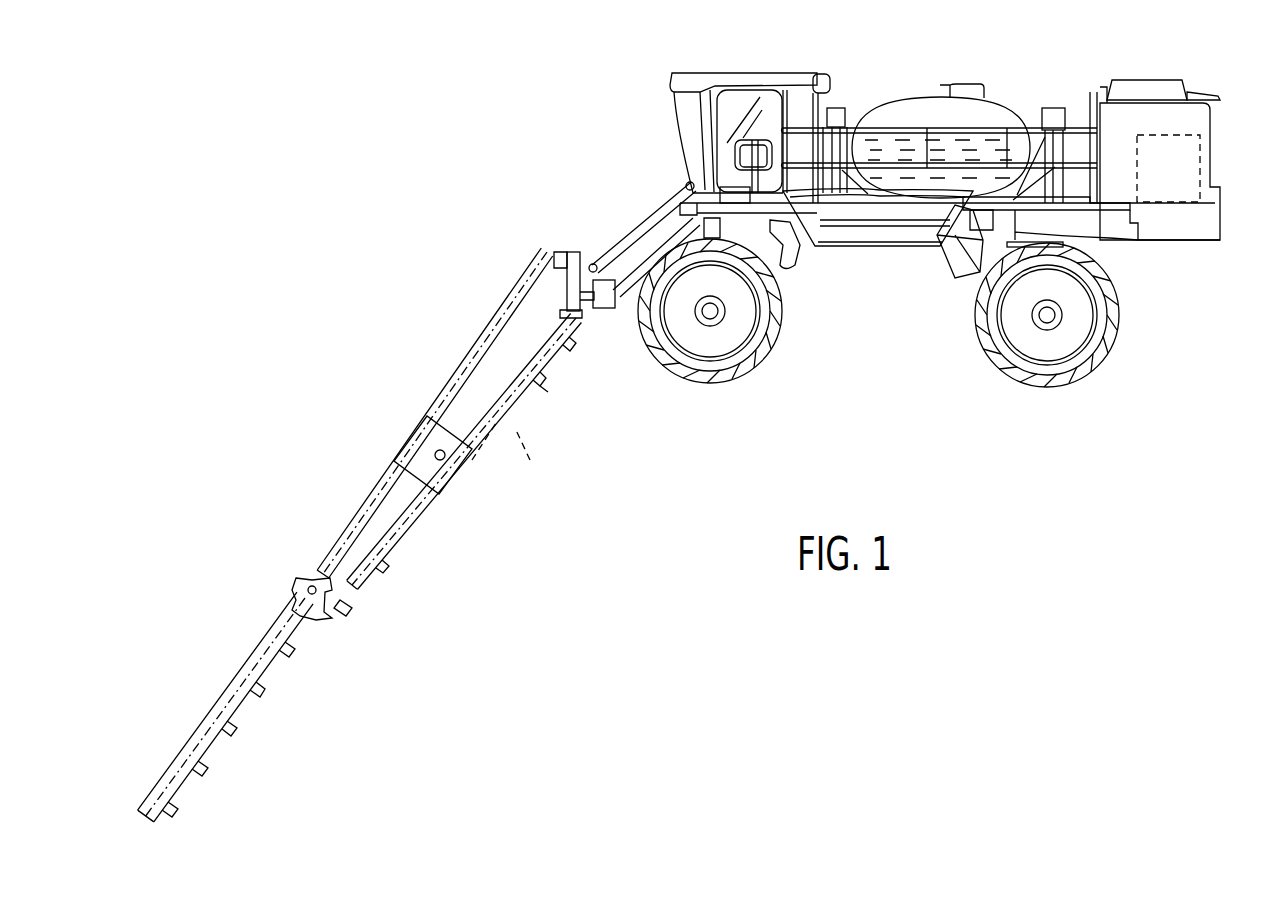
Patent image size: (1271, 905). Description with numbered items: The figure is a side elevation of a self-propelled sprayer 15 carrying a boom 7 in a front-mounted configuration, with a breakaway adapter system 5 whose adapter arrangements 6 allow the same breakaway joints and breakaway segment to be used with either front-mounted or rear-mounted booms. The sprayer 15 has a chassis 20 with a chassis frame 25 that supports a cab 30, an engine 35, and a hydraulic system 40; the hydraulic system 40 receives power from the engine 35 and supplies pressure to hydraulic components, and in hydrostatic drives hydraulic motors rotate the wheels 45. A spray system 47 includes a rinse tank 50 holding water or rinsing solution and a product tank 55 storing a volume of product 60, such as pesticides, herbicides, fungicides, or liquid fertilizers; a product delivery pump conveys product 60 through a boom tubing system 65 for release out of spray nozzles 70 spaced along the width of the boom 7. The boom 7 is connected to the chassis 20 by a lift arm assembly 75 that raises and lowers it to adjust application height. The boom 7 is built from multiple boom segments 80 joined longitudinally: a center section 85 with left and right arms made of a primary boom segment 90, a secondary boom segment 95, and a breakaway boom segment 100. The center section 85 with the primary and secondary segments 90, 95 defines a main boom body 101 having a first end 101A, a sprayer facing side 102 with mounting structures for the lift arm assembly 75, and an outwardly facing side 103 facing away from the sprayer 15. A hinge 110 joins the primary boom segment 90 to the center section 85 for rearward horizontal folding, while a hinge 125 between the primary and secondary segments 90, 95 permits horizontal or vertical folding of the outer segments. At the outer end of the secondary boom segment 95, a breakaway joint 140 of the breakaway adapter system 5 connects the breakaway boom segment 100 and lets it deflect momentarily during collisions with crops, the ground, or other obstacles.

The self-propelled sprayer 15 is at (950, 44).
The cab 30 is at (750, 62).
The product tank 55 is at (912, 88).
The product 60 is at (880, 145).
The spray system 47 is at (1018, 88).
The rinse tank 50 is at (1058, 110).
The hydraulic system 40 is at (1116, 178).
The engine 35 is at (1180, 152).
The chassis 20 is at (898, 258).
The chassis frame 25 is at (956, 250).
The wheels 45 is at (750, 380).
The lift arm assembly 75 is at (655, 193).
The center section 85 is at (570, 235).
The hinge 110 is at (560, 292).
The main boom body 101 is at (512, 272).
The primary boom segment 90 is at (448, 378).
The breakaway adapter system 5 is at (405, 322).
The first end 101A is at (408, 586).
The boom segments 80 is at (400, 382).
The breakaway boom segment 100 is at (210, 697).
The boom tubing system 65 is at (540, 387).
The outwardly facing side 103 is at (410, 397).
The boom 7 is at (598, 360).
The sprayer facing side 102 is at (588, 440).
The secondary boom segment 95 is at (370, 460).
The hinge 125 is at (458, 480).
The spray nozzles 70 is at (472, 460).
The breakaway joint 140 is at (335, 632).
The adapter arrangements 6 is at (306, 570).